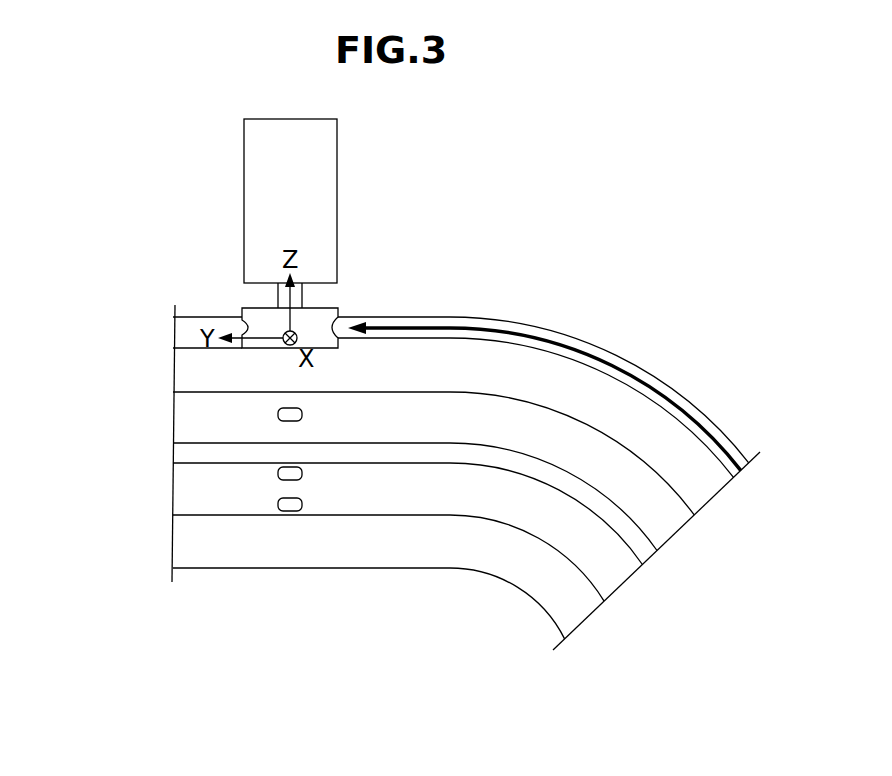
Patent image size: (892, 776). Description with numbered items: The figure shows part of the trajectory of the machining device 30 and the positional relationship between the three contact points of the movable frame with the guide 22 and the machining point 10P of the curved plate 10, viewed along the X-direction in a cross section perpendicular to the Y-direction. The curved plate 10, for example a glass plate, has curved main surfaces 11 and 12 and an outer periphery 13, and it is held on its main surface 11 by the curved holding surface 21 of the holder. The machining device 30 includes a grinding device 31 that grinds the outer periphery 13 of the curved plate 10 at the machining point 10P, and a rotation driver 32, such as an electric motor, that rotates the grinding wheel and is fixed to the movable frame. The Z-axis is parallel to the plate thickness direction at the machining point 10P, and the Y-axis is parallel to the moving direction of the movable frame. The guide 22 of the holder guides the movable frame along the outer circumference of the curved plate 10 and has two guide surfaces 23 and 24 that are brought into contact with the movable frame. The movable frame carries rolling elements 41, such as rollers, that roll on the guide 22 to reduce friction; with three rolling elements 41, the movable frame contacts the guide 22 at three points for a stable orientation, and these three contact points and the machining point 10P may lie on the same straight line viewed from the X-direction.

The curved plate 10 is at (400, 314).
The machining point 10P is at (282, 322).
The main surface 11 is at (193, 338).
The main surface 12 is at (430, 317).
The outer periphery 13 is at (480, 323).
The holding surface 21 is at (178, 352).
The guide 22 is at (95, 407).
The guide surface 23 is at (183, 418).
The guide surface 24 is at (185, 490).
The machining device 30 is at (408, 168).
The grinding device 31 is at (327, 312).
The rotation driver 32 is at (330, 178).
The rolling element 41 is at (278, 416).